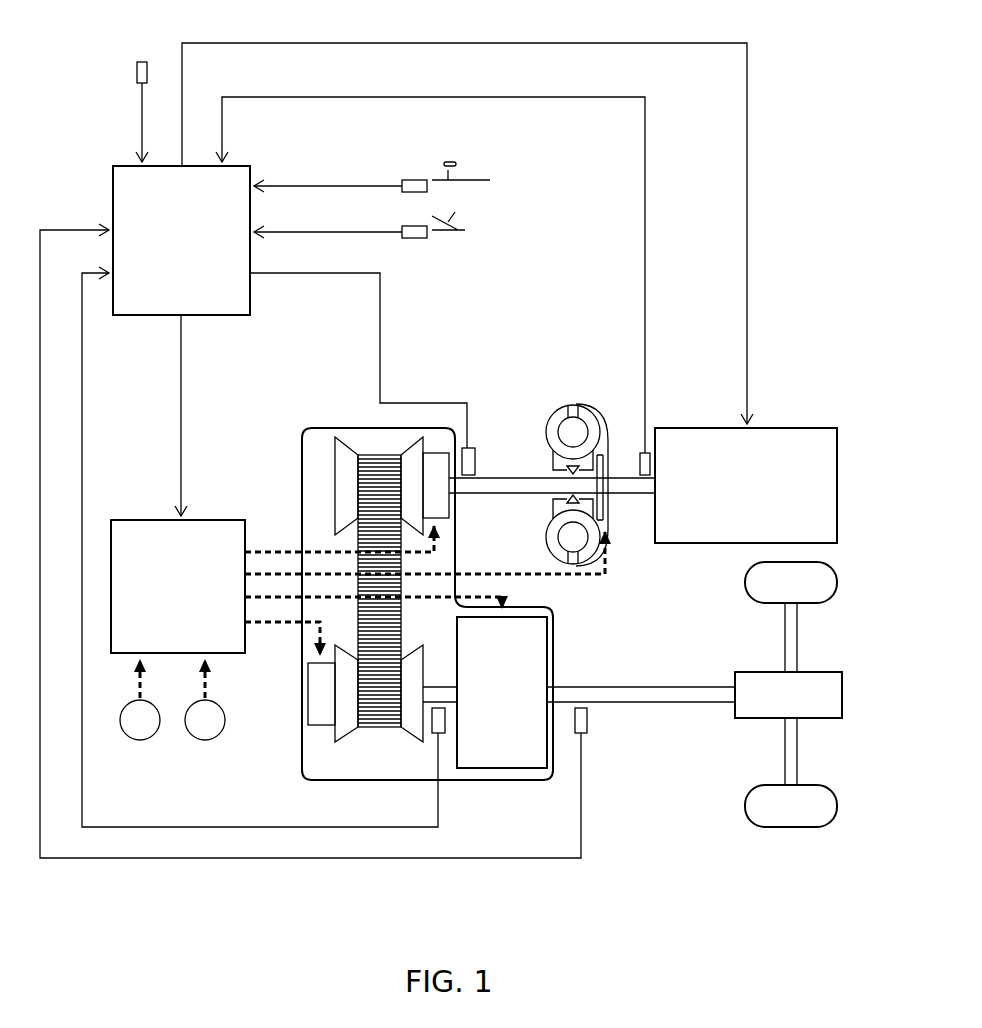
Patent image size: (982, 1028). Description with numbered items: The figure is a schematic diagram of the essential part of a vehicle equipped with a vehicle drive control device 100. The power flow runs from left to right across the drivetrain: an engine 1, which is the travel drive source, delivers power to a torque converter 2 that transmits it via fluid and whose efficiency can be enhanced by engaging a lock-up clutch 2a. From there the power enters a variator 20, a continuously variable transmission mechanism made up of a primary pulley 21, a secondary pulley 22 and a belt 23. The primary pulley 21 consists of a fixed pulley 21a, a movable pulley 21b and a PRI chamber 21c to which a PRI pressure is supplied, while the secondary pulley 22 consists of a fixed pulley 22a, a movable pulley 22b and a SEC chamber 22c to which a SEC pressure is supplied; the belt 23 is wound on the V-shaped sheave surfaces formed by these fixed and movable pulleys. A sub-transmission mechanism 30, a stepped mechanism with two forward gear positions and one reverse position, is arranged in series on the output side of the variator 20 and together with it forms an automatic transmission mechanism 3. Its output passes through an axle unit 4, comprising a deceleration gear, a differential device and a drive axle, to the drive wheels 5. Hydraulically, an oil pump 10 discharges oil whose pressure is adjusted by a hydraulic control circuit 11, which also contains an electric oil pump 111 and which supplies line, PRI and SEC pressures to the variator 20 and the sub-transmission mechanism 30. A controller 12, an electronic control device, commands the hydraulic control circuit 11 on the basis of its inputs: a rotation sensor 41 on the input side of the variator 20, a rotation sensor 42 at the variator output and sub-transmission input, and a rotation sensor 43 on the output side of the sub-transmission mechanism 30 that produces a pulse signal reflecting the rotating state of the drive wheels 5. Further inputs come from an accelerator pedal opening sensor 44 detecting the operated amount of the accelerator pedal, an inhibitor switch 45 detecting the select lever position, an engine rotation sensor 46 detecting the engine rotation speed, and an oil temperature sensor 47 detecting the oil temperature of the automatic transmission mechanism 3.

The vehicle drive control device 100 is at (92, 118).
The engine 1 is at (822, 443).
The torque converter 2 is at (592, 413).
The lock-up clutch 2a is at (601, 510).
The automatic transmission mechanism 3 is at (325, 428).
The axle unit 4 is at (850, 695).
The drive wheels 5 is at (837, 583).
The oil pump 10 is at (205, 740).
The hydraulic control circuit 11 is at (126, 520).
The controller 12 is at (233, 166).
The variator 20 is at (378, 589).
The primary pulley 21 is at (386, 447).
The fixed pulley 21a is at (348, 470).
The movable pulley 21b is at (412, 495).
The PRI chamber 21c is at (434, 466).
The secondary pulley 22 is at (334, 736).
The fixed pulley 22a is at (410, 716).
The movable pulley 22b is at (348, 716).
The SEC chamber 22c is at (312, 718).
The belt 23 is at (378, 730).
The sub-transmission mechanism 30 is at (553, 652).
The rotation sensor 41 is at (466, 448).
The rotation sensor 42 is at (438, 735).
The rotation sensor 43 is at (588, 722).
The accelerator pedal opening sensor 44 is at (414, 238).
The inhibitor switch 45 is at (414, 180).
The engine rotation sensor 46 is at (640, 455).
The oil temperature sensor 47 is at (140, 62).
The electric oil pump 111 is at (140, 740).